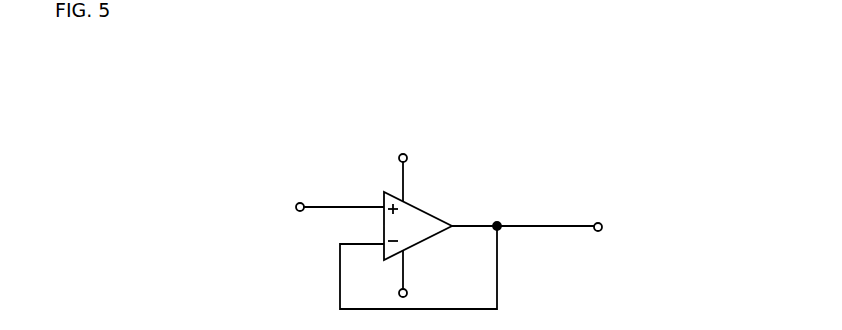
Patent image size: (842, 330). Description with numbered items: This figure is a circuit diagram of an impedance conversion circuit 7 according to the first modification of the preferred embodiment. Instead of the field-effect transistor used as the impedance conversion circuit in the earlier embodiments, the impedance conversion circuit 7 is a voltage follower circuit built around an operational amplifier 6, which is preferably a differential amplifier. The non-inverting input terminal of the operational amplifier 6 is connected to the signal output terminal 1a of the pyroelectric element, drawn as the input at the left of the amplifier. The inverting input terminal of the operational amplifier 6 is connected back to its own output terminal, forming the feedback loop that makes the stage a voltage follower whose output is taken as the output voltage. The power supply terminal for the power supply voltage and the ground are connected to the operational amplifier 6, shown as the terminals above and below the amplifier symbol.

The impedance conversion circuit 7 is at (238, 120).
The operational amplifier 6 is at (433, 215).
The signal output terminal 1a is at (322, 205).